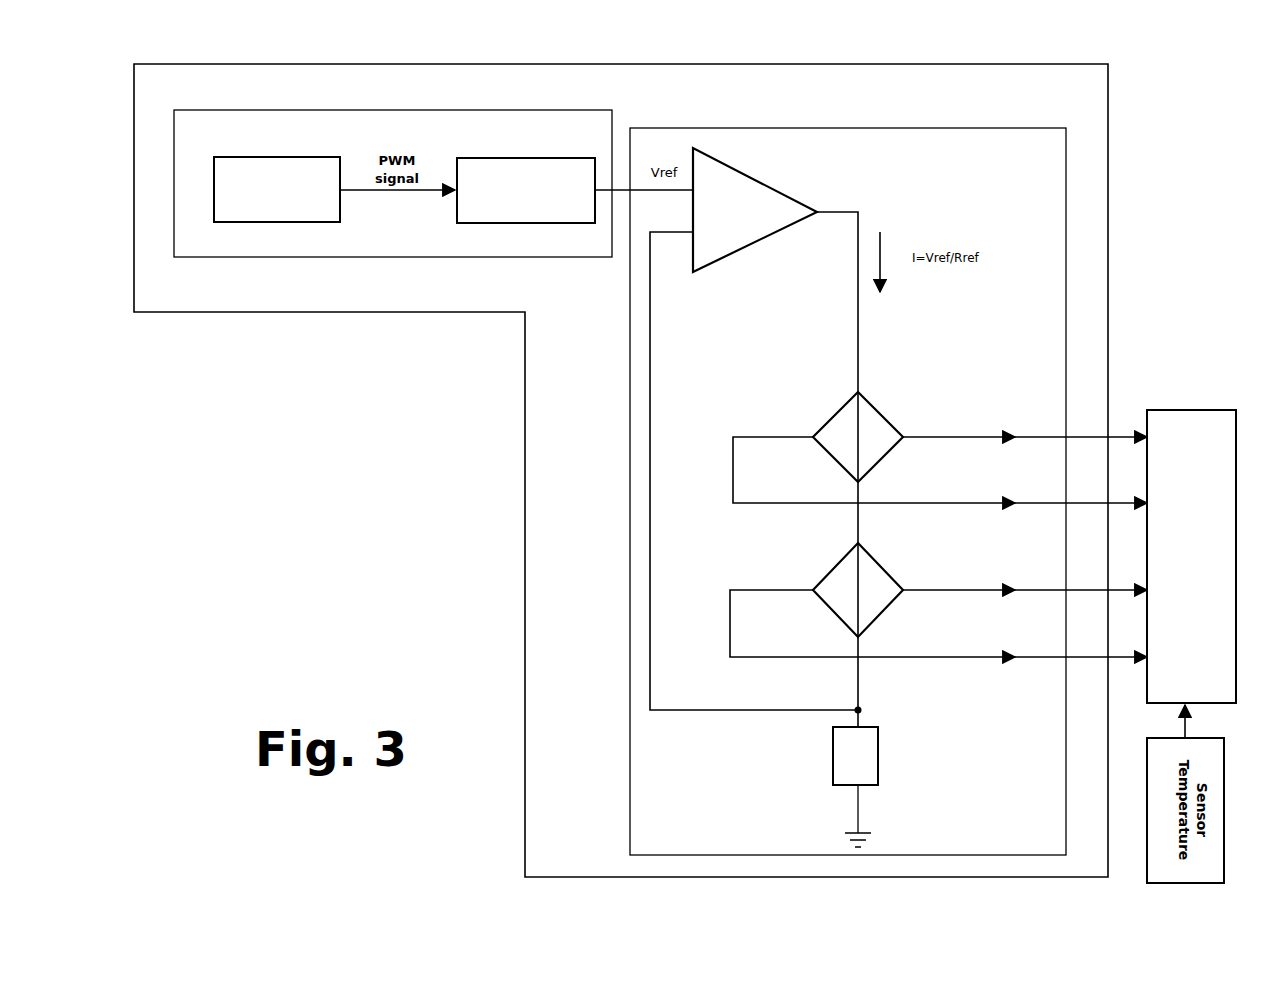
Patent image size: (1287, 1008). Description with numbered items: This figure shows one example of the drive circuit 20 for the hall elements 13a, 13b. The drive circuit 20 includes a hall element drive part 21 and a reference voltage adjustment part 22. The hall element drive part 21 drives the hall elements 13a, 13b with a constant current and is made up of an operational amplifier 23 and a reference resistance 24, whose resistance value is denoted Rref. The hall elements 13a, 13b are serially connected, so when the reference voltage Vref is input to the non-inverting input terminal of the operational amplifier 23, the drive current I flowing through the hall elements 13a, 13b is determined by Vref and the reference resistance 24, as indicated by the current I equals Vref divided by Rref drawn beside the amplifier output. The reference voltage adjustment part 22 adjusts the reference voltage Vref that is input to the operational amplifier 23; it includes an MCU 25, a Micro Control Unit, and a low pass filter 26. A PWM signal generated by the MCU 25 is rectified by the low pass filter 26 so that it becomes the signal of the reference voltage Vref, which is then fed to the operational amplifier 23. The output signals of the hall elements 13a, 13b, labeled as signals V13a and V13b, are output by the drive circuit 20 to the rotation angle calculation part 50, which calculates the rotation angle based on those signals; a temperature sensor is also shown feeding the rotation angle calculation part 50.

The drive circuit 20 is at (1110, 128).
The hall element drive part 21 is at (688, 128).
The reference voltage adjustment part 22 is at (572, 112).
The operational amplifier 23 is at (766, 182).
The reference resistance 24 is at (878, 745).
The MCU 25 is at (286, 157).
The low pass filter 26 is at (500, 158).
The hall element 13a is at (873, 405).
The hall element 13b is at (888, 568).
The rotation angle calculation part 50 is at (1205, 410).